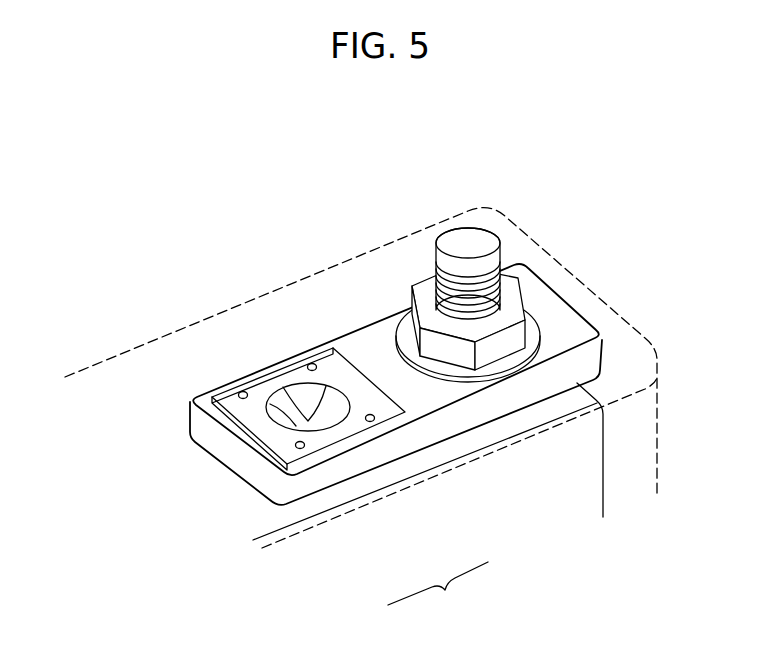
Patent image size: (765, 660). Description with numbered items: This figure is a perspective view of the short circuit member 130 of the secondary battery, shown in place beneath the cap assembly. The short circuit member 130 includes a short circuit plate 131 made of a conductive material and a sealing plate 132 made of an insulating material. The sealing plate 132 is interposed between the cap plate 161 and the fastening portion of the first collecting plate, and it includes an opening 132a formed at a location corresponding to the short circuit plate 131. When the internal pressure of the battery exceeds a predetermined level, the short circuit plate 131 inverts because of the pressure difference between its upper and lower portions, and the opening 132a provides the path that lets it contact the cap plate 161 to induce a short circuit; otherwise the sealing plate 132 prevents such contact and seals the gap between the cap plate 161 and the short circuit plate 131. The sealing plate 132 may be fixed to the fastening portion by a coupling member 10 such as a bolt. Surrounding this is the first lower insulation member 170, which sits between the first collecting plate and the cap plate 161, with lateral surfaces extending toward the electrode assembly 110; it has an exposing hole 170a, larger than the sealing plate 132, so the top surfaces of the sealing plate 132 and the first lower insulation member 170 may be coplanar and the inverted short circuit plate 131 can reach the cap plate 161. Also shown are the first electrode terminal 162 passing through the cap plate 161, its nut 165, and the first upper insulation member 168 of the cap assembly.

The coupling member 10 is at (302, 451).
The electrode assembly 110 is at (592, 452).
The short circuit member 130 is at (438, 595).
The short circuit plate 131 is at (340, 430).
The sealing plate 132 is at (328, 438).
The opening 132a is at (270, 408).
The cap plate 161 is at (295, 299).
The first electrode terminal 162 is at (468, 237).
The nut 165 is at (513, 293).
The first upper insulation member 168 is at (533, 329).
The first lower insulation member 170 is at (212, 448).
The exposing hole 170a is at (213, 395).